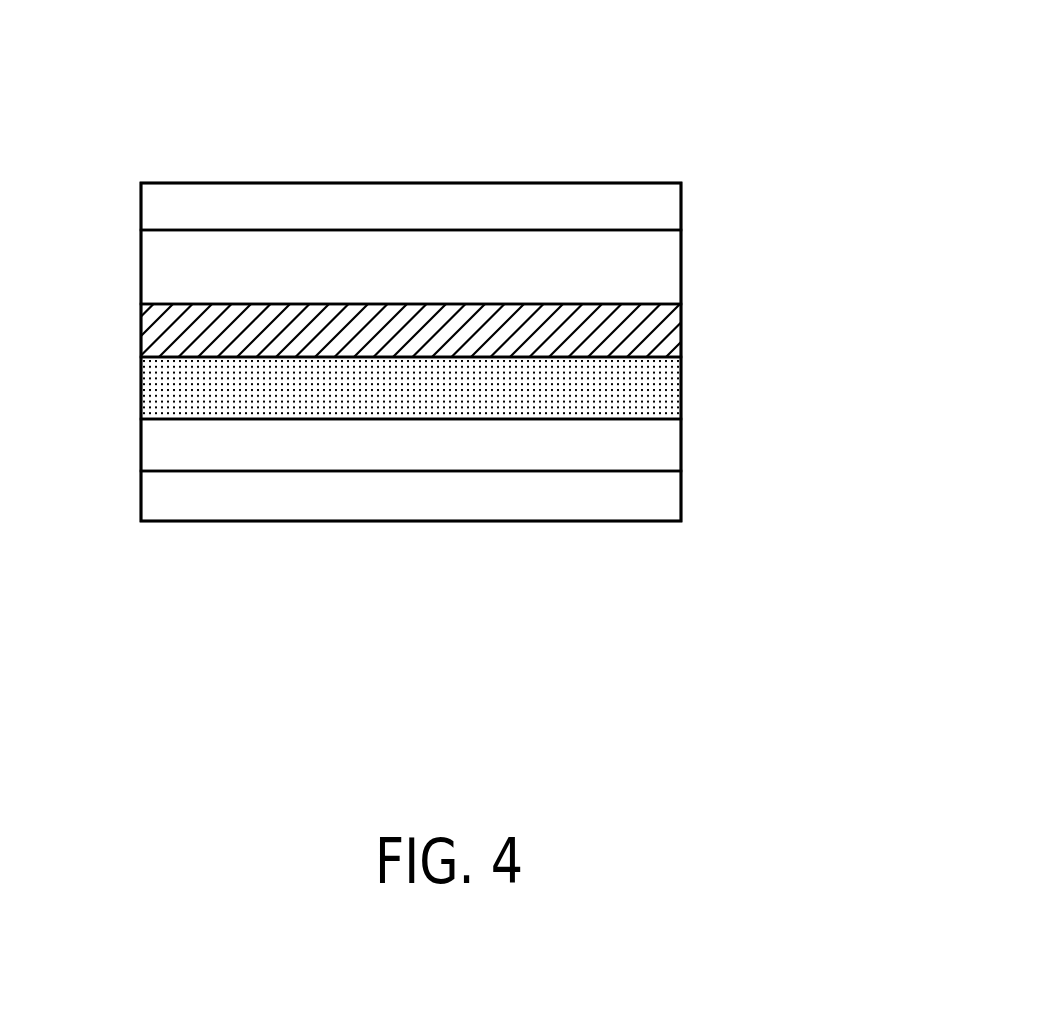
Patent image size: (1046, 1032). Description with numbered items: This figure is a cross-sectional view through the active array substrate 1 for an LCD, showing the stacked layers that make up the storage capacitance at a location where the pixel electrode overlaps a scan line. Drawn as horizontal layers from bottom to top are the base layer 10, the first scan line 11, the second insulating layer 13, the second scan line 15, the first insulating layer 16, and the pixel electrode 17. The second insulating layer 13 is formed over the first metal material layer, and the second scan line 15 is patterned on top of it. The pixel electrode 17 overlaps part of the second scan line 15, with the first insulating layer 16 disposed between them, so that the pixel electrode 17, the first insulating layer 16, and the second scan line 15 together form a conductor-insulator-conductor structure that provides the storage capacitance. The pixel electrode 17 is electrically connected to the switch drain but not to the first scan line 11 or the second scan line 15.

The active array substrate 1 is at (836, 95).
The substrate 10 is at (682, 496).
The first scan line 11 is at (682, 440).
The second insulating layer 13 is at (141, 387).
The second scan line 15 is at (682, 325).
The first insulating layer 16 is at (141, 275).
The pixel electrode 17 is at (682, 203).